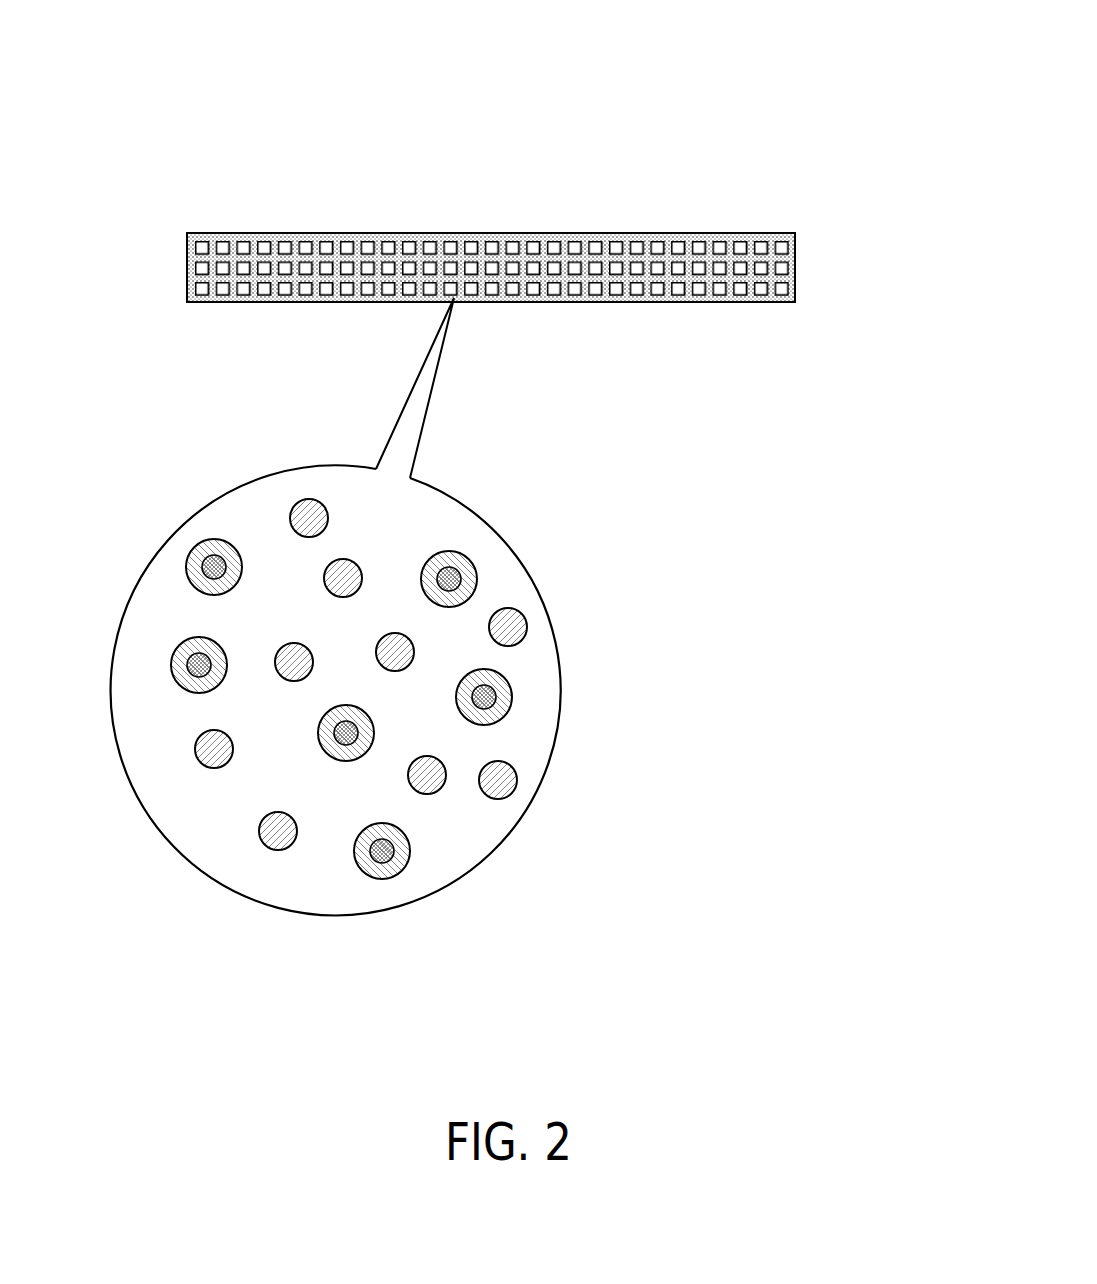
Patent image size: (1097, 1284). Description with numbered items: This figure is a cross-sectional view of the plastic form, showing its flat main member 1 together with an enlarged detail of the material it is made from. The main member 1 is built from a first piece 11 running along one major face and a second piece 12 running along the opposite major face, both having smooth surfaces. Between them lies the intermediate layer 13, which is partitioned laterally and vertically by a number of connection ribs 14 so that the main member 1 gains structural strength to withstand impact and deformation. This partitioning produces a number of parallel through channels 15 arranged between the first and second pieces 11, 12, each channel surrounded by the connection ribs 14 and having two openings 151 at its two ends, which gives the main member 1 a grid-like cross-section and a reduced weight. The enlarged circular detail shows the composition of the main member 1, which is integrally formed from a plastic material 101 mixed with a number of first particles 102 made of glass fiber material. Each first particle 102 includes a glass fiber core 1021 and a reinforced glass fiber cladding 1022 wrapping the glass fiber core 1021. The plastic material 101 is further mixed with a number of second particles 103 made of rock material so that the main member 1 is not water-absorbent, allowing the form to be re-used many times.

The main member 1 is at (435, 234).
The first piece 11 is at (347, 232).
The second piece 12 is at (233, 303).
The intermediate layer 13 is at (203, 255).
The connection ribs 14 is at (233, 247).
The through channels 15 is at (633, 274).
The openings 151 is at (648, 365).
The plastic material 101 is at (414, 779).
The first particles 102 is at (380, 958).
The glass fiber core 1021 is at (333, 921).
The reinforced glass fiber cladding 1022 is at (407, 864).
The second particles 103 is at (513, 793).